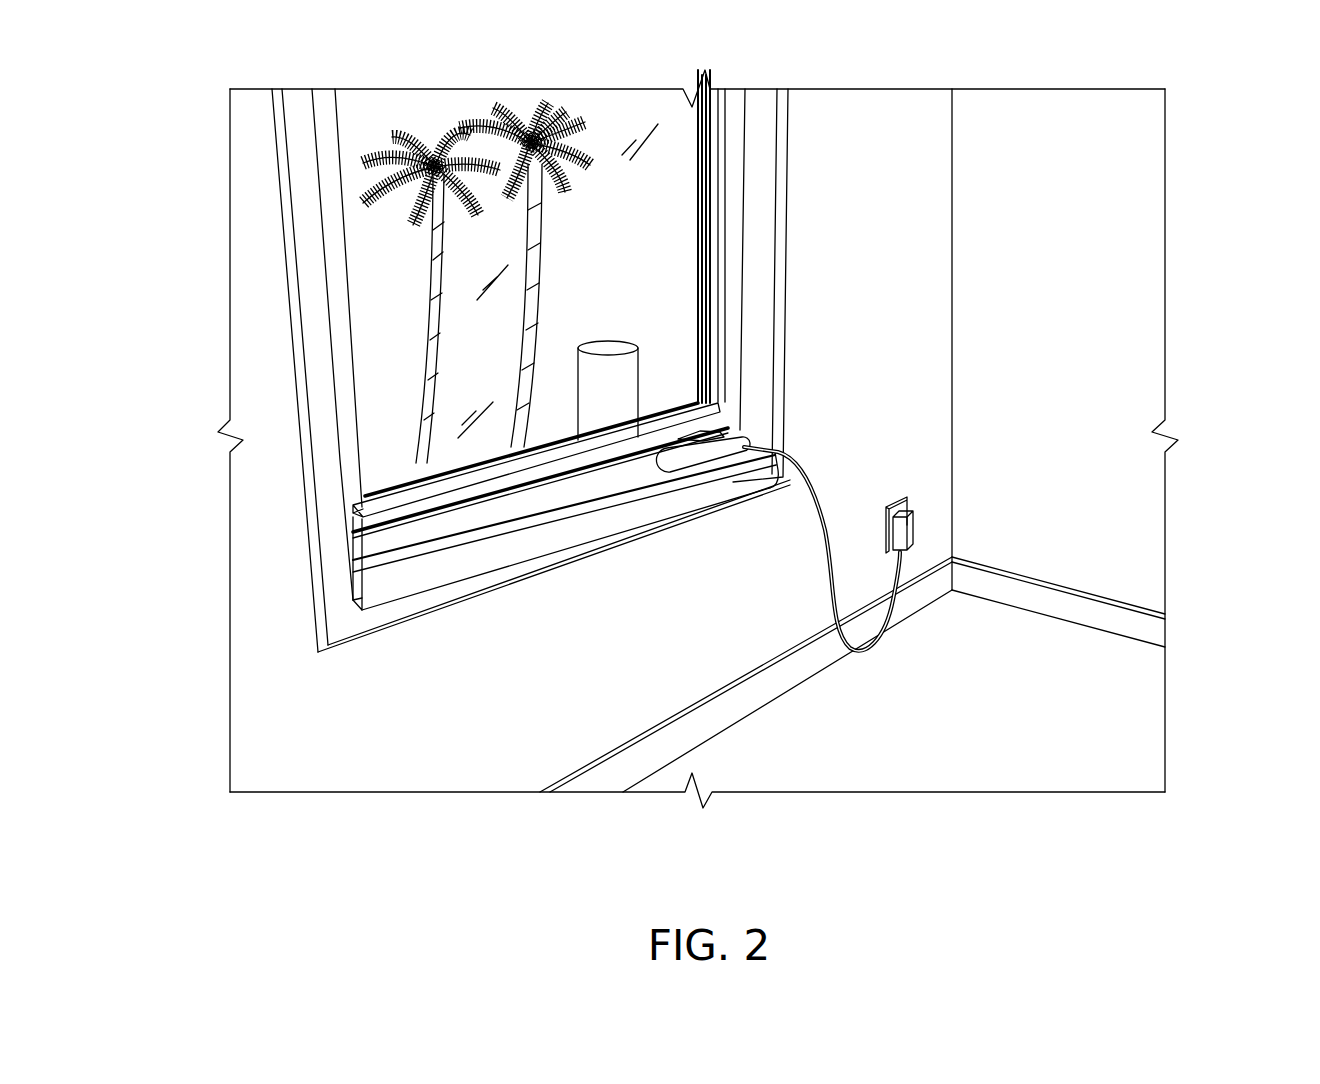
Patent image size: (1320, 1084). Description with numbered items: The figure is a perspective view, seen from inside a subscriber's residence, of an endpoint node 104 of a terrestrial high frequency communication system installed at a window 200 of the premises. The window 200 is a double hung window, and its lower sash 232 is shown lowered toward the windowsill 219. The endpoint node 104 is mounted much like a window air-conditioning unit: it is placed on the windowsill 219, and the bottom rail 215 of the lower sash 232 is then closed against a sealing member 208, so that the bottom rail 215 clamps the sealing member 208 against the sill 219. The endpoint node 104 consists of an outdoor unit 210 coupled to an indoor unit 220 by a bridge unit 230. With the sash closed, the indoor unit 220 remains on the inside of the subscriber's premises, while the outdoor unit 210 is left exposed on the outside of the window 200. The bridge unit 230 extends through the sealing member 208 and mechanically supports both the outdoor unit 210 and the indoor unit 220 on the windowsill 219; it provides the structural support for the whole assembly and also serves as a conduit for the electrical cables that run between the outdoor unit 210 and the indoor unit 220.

The endpoint node 104 is at (813, 263).
The window 200 is at (755, 153).
The sealing member 208 is at (490, 507).
The outdoor unit (ODU) 210 is at (612, 372).
The bottom rail 215 is at (402, 520).
The windowsill 219 is at (358, 585).
The indoor unit (IDU) 220 is at (713, 462).
The bridge unit 230 is at (667, 438).
The lower sash 232 is at (715, 215).